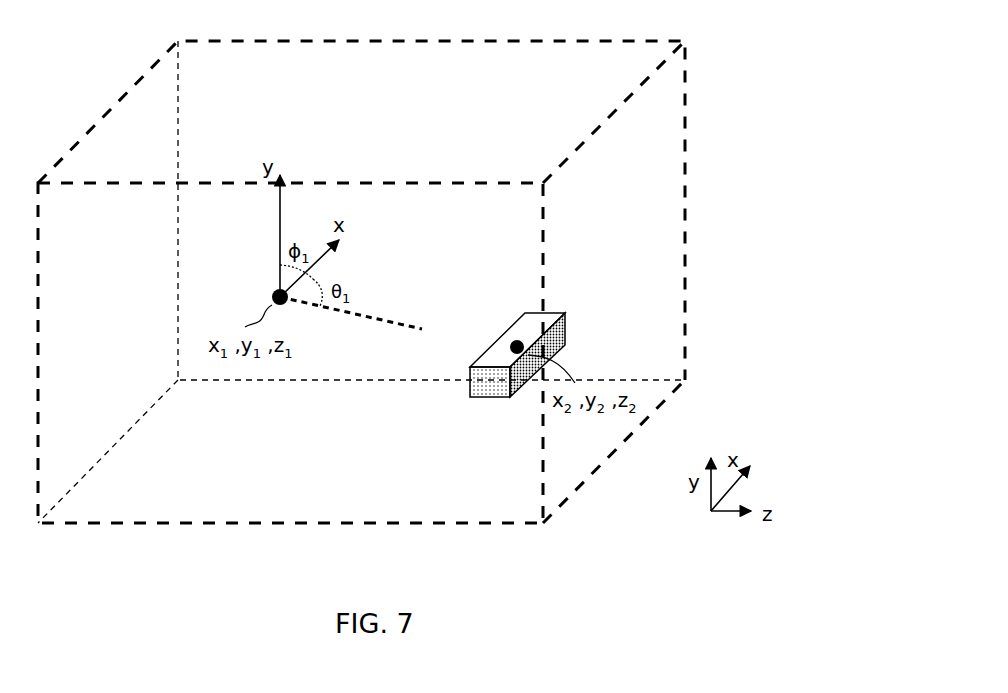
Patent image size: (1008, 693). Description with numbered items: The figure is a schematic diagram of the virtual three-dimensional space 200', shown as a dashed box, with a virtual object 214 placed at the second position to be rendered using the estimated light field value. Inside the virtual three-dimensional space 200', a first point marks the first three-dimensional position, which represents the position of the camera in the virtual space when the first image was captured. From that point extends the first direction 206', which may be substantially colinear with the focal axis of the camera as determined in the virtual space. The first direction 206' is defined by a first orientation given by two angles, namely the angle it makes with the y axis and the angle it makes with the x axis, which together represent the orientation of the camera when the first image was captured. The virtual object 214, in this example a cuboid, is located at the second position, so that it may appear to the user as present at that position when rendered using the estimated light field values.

The virtual three-dimensional space 200' is at (406, 282).
The first direction 206' is at (373, 292).
The virtual object 214 is at (565, 328).